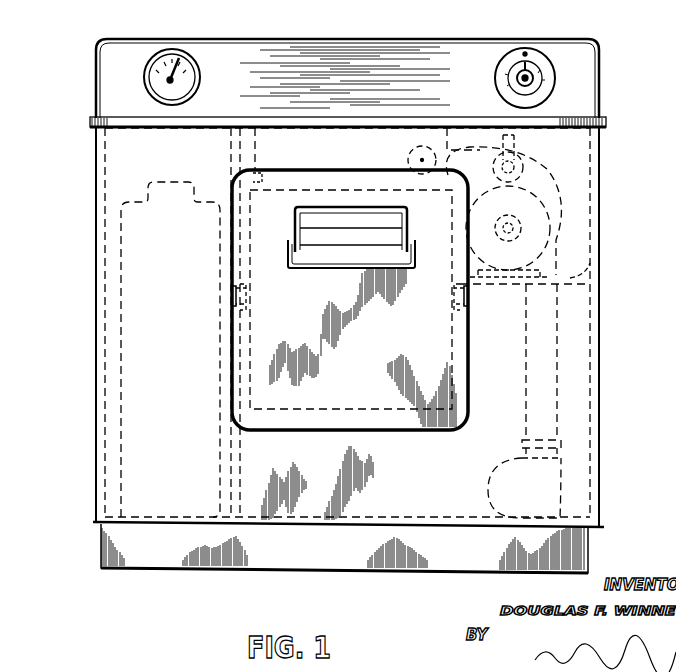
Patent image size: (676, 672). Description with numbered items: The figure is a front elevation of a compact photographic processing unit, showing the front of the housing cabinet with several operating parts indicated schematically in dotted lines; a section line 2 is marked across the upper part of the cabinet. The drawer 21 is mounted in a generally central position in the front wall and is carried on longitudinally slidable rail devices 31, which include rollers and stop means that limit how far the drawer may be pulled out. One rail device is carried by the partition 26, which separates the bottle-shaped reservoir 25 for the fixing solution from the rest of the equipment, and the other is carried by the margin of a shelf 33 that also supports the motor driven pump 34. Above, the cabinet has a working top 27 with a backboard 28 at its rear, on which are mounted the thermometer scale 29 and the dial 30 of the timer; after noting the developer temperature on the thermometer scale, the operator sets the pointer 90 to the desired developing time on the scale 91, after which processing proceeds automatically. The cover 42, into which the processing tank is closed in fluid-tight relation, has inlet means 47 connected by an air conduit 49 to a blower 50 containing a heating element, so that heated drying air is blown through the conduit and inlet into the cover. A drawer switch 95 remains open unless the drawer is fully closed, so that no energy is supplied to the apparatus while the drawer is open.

The section line 2- 2 is at (90, 126).
The drawer 21 is at (416, 430).
The reservoir 25 is at (125, 381).
The partition 26 is at (230, 144).
The working top 27 is at (440, 116).
The backboard 28 is at (410, 48).
The thermometer scale 29 is at (180, 57).
The dial 30 is at (530, 48).
The rail devices 31 is at (248, 295).
The shelf 33 is at (591, 264).
The motor driven pump 34 is at (535, 198).
The cover 42 is at (330, 143).
The inlet means 47 is at (408, 153).
The air conduit 49 is at (556, 410).
The blower 50 is at (495, 474).
The pointer 90 is at (532, 74).
The scale 91 is at (508, 72).
The drawer switch 95 is at (258, 176).